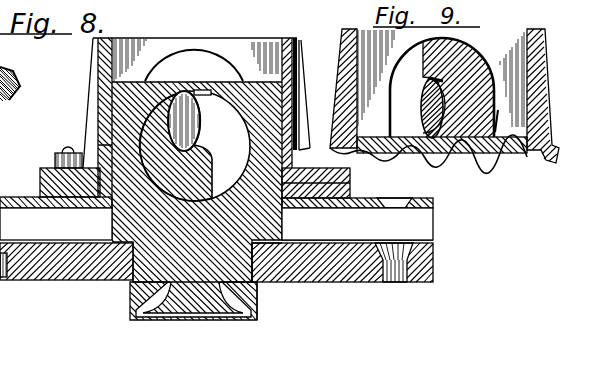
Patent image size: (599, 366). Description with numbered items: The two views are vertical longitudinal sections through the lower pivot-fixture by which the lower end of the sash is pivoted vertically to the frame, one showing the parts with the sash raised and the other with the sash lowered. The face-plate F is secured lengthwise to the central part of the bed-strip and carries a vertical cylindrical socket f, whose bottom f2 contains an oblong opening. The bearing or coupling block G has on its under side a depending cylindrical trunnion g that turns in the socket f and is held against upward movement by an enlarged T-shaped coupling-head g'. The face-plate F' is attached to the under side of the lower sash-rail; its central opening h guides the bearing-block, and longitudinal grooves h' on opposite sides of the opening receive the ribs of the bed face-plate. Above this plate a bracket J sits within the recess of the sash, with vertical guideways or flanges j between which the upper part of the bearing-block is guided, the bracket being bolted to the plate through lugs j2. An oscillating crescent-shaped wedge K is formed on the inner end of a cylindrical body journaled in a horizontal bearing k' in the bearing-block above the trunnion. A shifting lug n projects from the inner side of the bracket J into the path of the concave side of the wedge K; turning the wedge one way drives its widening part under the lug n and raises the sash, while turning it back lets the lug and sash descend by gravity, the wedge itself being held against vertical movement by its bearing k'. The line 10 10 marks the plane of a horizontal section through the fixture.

In FIG. 8, the vertical guideways or flanges j is at (112, 80).
In FIG. 9, the vertical guideways or flanges j is at (530, 82).
In FIG. 8, the bracket J is at (196, 60).
In FIG. 9, the bracket J is at (441, 78).
In FIG. 8, the oscillating wedge K is at (252, 146).
In FIG. 9, the oscillating wedge K is at (444, 87).
In FIG. 8, the shifting lug n is at (189, 120).
In FIG. 9, the shifting lug n is at (439, 108).
In FIG. 8, the slot 10 is at (98, 146).
In FIG. 8, the lugs j2 is at (42, 177).
In FIG. 8, the opening h is at (56, 214).
In FIG. 8, the longitudinal grooves h' is at (56, 224).
In FIG. 8, the cylindrical pivot or trunnion g is at (66, 275).
In FIG. 8, the coupling-head g' is at (193, 312).
In FIG. 8, the vertical cylindrical socket f is at (258, 244).
In FIG. 8, the bottom of the socket f2 is at (256, 304).
In FIG. 8, the horizontal bearing k' is at (327, 183).
In FIG. 8, the face-plate F' is at (371, 212).
In FIG. 8, the bearing or coupling block G is at (273, 226).
In FIG. 8, the face-plate F is at (353, 262).